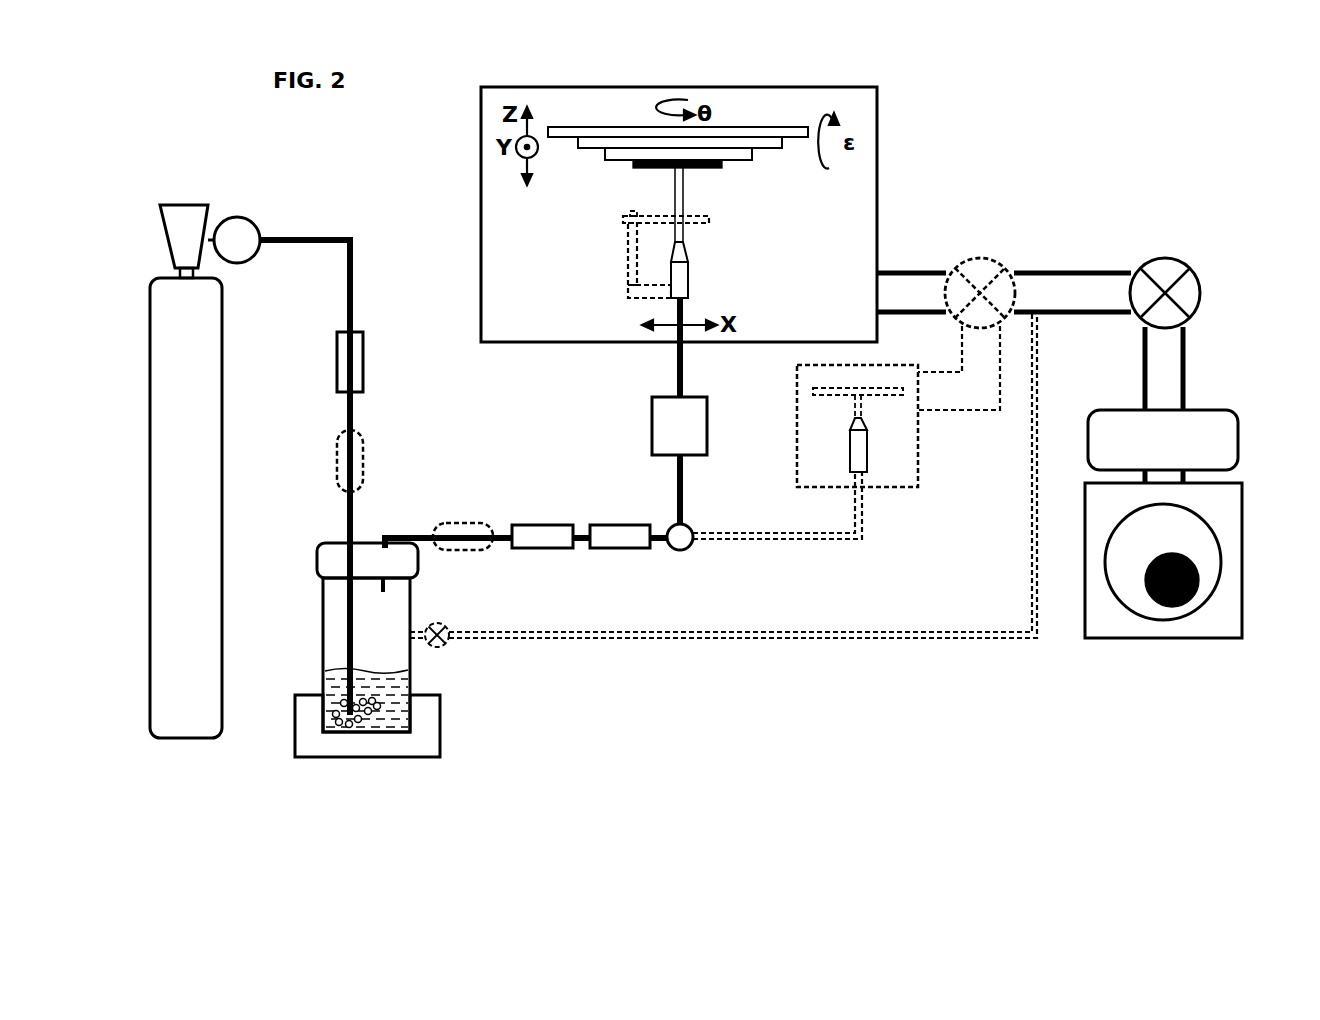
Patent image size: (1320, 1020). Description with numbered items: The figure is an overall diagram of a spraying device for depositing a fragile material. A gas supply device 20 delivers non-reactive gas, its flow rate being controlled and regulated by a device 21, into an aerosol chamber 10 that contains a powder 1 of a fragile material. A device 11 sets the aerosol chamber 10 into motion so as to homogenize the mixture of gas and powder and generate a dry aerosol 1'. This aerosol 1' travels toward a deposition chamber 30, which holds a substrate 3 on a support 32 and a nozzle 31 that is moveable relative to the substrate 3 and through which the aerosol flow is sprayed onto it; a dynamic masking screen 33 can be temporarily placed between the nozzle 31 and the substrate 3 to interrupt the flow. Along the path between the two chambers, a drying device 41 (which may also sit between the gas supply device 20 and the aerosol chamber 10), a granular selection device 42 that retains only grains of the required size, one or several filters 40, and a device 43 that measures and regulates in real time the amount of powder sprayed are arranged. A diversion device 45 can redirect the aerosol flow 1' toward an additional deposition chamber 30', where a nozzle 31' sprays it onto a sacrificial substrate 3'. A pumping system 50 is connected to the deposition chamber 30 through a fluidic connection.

The powder of a fragile material 1 is at (339, 695).
The aerosol 1' is at (768, 296).
The substrate 3 is at (699, 175).
The sacrificial substrate 3' is at (858, 419).
The aerosol chamber 10 is at (325, 625).
The device for setting the aerosol chamber into motion 11 is at (428, 713).
The gas supply device 20 is at (160, 472).
The device for controlling and regulating the flow rate 21 is at (352, 360).
The deposition chamber 30 is at (652, 214).
The additional deposition chamber 30' is at (883, 426).
The nozzle 31 is at (708, 270).
The nozzle of the additional chamber 31' is at (831, 445).
The support for the substrate 32 is at (730, 130).
The dynamic masking screen 33 is at (628, 255).
The filter 40 is at (622, 538).
The drying device 41 is at (357, 462).
The granular selection device 42 is at (545, 538).
The device for controlling the load of the aerosol 43 is at (697, 425).
The device for diverting the aerosol flow 45 is at (677, 540).
The pumping system 50 is at (1230, 505).